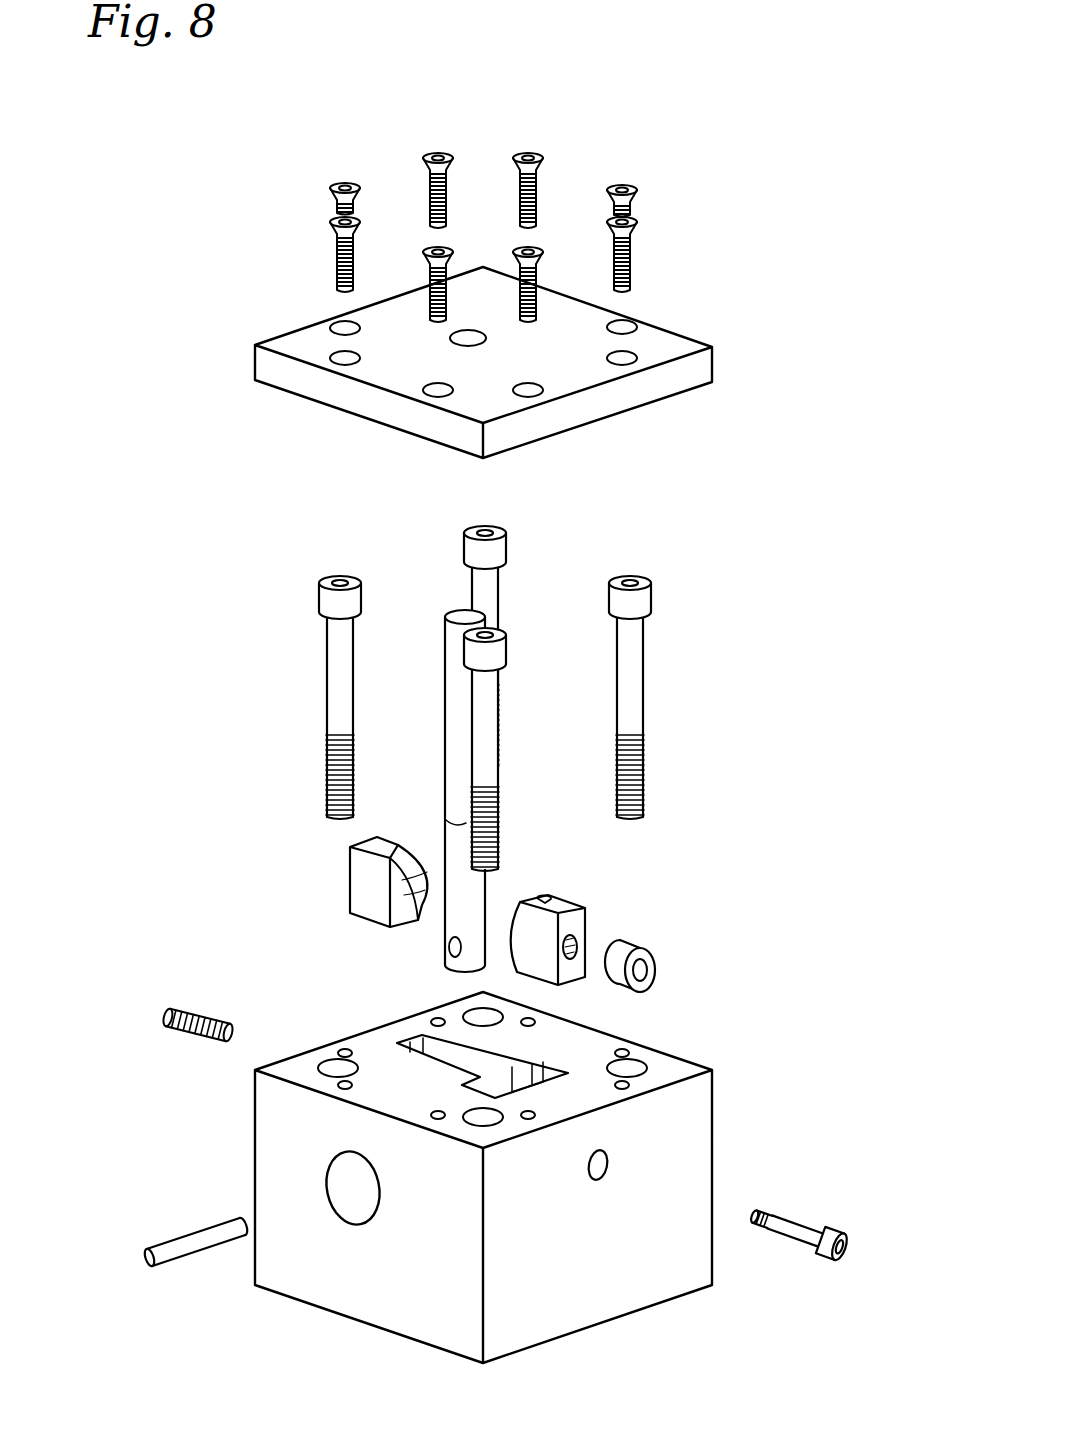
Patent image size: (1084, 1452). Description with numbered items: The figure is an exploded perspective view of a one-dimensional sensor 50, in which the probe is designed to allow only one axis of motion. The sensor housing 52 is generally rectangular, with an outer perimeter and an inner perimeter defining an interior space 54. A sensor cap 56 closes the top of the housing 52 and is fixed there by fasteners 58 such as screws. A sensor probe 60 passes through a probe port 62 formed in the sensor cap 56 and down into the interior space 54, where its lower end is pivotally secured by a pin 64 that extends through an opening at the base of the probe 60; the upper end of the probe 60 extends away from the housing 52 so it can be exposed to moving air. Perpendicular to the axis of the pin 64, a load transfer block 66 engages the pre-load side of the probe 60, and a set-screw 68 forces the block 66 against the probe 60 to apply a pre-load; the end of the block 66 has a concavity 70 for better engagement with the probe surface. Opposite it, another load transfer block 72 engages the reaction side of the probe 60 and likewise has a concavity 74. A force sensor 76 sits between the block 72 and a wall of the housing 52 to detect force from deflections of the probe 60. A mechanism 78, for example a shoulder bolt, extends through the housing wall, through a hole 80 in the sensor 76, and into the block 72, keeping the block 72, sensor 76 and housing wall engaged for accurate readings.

The one-dimensional sensor 50 is at (788, 902).
The sensor housing 52 is at (483, 1175).
The interior space 54 is at (520, 1087).
The sensor cap 56 is at (497, 362).
The fasteners 58 is at (627, 182).
The sensor probe 60 is at (447, 630).
The probe port 62 is at (467, 342).
The pin 64 is at (177, 1263).
The load transfer block 66 is at (356, 874).
The set-screw 68 is at (187, 1033).
The concavity 70 is at (405, 860).
The load transfer block 72 is at (587, 918).
The concavity 74 is at (537, 900).
The force sensor 76 is at (665, 962).
The mechanism 78 is at (793, 1217).
The hole 80 is at (643, 973).